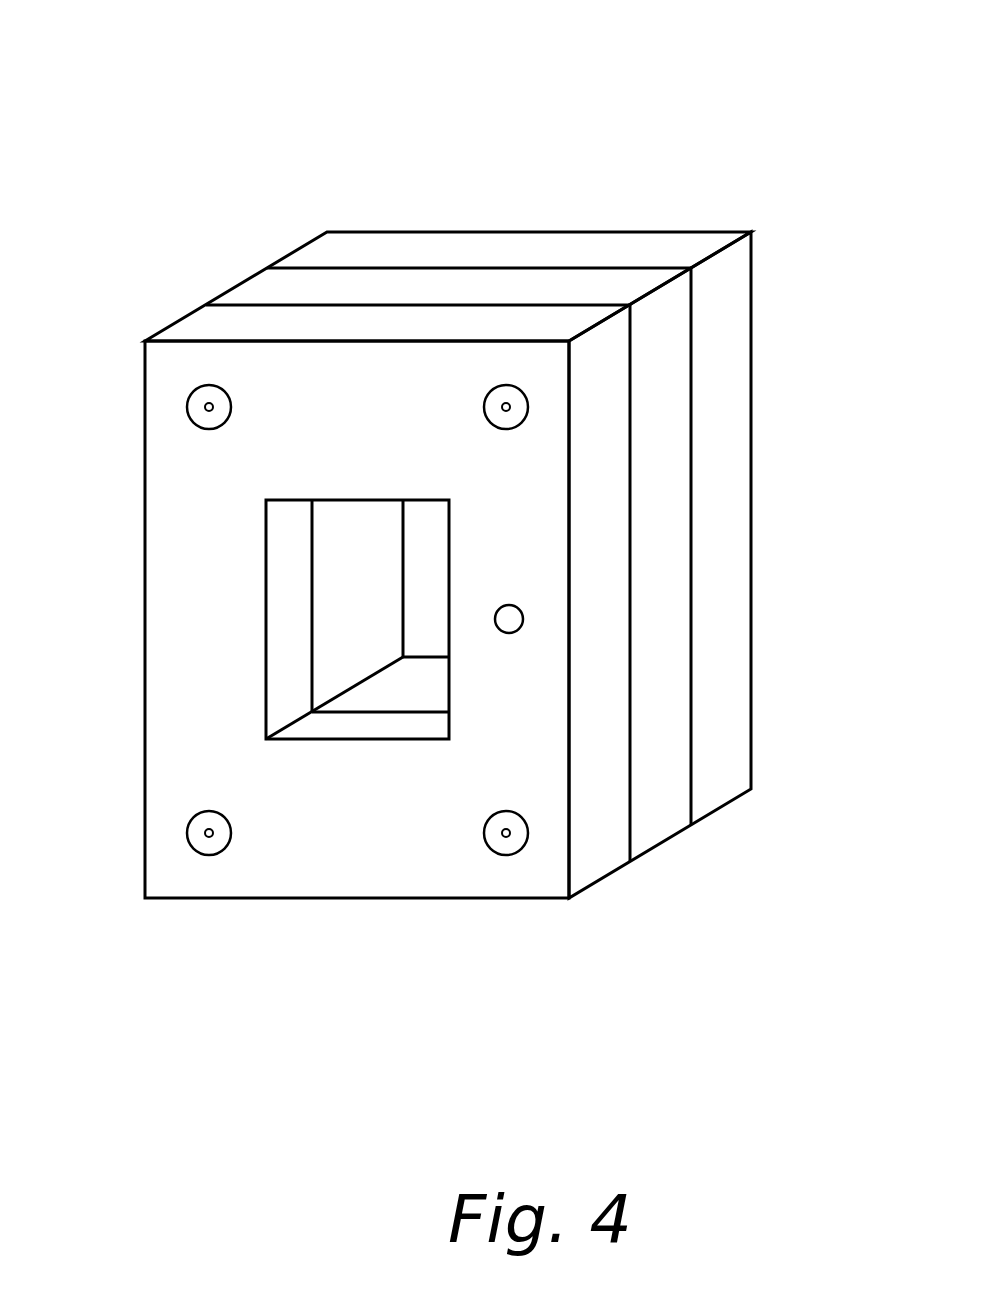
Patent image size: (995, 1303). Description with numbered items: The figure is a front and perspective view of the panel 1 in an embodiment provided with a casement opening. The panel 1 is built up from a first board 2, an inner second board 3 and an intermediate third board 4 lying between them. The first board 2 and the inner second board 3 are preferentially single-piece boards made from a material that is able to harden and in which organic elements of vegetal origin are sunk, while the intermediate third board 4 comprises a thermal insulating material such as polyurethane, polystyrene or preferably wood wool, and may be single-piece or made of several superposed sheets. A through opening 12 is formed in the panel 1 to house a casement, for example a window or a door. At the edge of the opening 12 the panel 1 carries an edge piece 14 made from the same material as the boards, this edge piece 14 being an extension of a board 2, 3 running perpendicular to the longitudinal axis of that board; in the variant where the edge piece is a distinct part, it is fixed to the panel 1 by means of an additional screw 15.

The panel 1 is at (505, 88).
The first board 2 is at (192, 664).
The inner second board 3 is at (507, 252).
The intermediate third board 4 is at (267, 291).
The opening 12 is at (425, 541).
The edge piece formed by extension 14 is at (350, 569).
The additional screw 15 is at (524, 619).